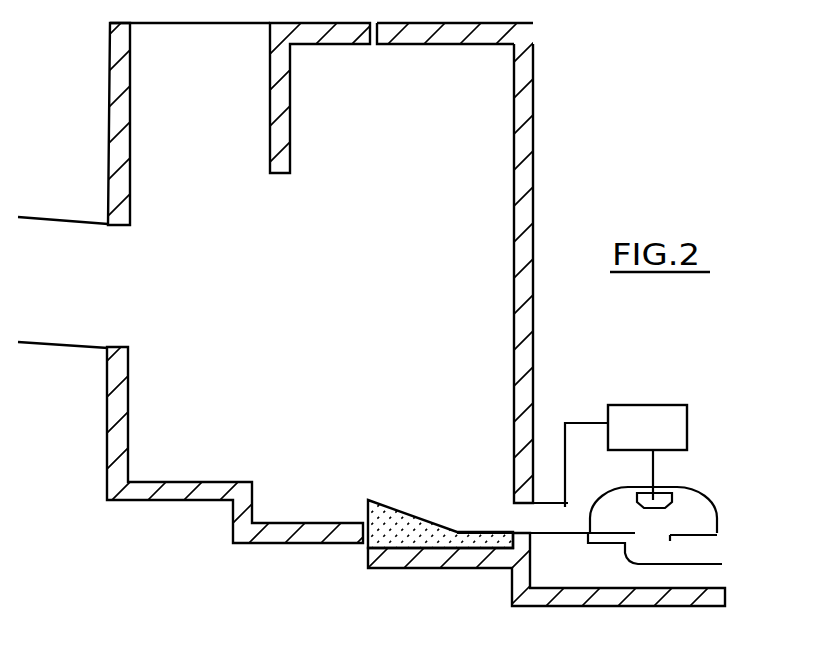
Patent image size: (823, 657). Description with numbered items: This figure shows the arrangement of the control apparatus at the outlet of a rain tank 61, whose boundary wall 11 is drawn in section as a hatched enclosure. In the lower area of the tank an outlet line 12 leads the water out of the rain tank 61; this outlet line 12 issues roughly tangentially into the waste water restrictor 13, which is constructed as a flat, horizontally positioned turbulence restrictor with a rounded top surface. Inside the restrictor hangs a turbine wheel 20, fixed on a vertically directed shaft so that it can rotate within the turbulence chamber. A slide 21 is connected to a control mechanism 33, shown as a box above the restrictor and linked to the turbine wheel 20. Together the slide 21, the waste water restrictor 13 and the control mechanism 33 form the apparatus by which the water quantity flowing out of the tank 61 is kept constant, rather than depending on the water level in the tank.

The boundary wall 11 is at (521, 205).
The rain tank 61 is at (480, 98).
The outlet line 12 is at (543, 515).
The waste water restrictor 13 is at (692, 513).
The turbine wheel 20 is at (655, 498).
The slide 21 is at (565, 473).
The control mechanism 33 is at (665, 428).